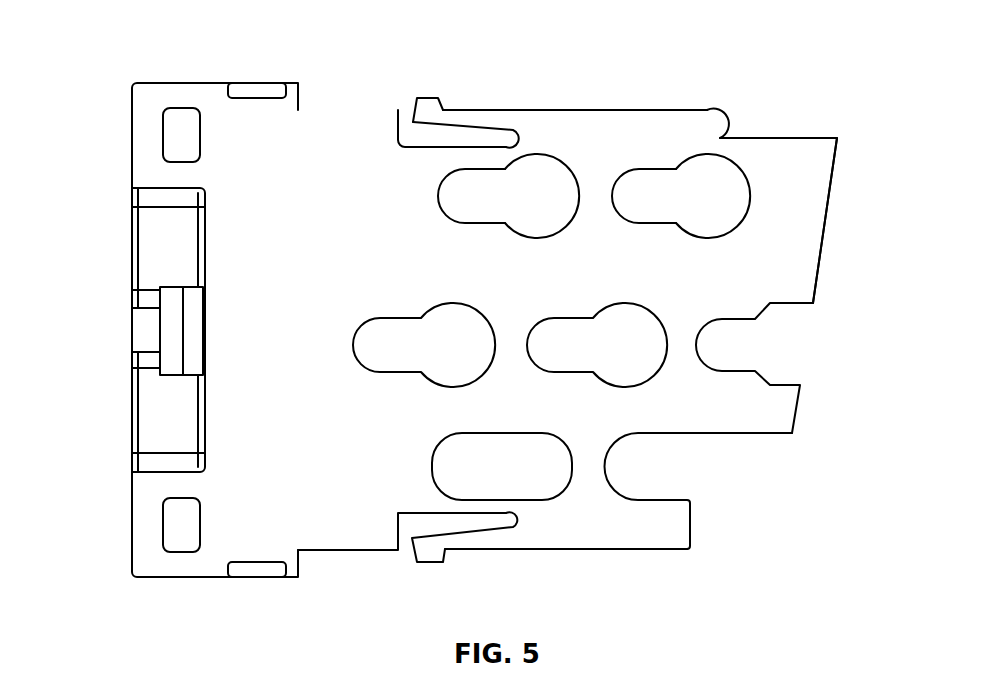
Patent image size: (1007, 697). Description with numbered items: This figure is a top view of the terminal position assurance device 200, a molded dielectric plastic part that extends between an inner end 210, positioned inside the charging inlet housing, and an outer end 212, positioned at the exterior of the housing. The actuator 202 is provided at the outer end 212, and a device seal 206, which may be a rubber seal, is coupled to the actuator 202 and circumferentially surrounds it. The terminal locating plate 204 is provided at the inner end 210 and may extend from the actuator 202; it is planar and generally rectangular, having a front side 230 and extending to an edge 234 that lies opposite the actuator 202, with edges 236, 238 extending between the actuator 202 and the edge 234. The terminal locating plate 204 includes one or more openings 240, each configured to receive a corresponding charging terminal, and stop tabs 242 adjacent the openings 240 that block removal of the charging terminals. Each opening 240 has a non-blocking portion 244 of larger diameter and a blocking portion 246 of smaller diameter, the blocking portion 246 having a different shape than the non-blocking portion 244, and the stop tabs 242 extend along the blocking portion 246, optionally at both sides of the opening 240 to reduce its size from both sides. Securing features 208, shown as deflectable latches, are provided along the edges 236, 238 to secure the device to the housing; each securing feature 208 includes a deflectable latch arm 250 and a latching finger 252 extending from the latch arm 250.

The terminal position assurance device 200 is at (716, 50).
The actuator 202 is at (148, 562).
The terminal locating plate 204 is at (657, 528).
The device seal 206 is at (258, 572).
The securing feature 208 is at (470, 543).
The inner end 210 is at (848, 310).
The outer end 212 is at (108, 384).
The front side 230 is at (805, 178).
The edge 234 is at (828, 222).
The edge 236 is at (590, 550).
The edge 238 is at (552, 110).
The opening 240 is at (733, 182).
The stop tab 242 is at (650, 178).
The non-blocking portion 244 is at (549, 182).
The blocking portion 246 is at (483, 185).
The latch arm 250 is at (472, 118).
The latching finger 252 is at (430, 99).